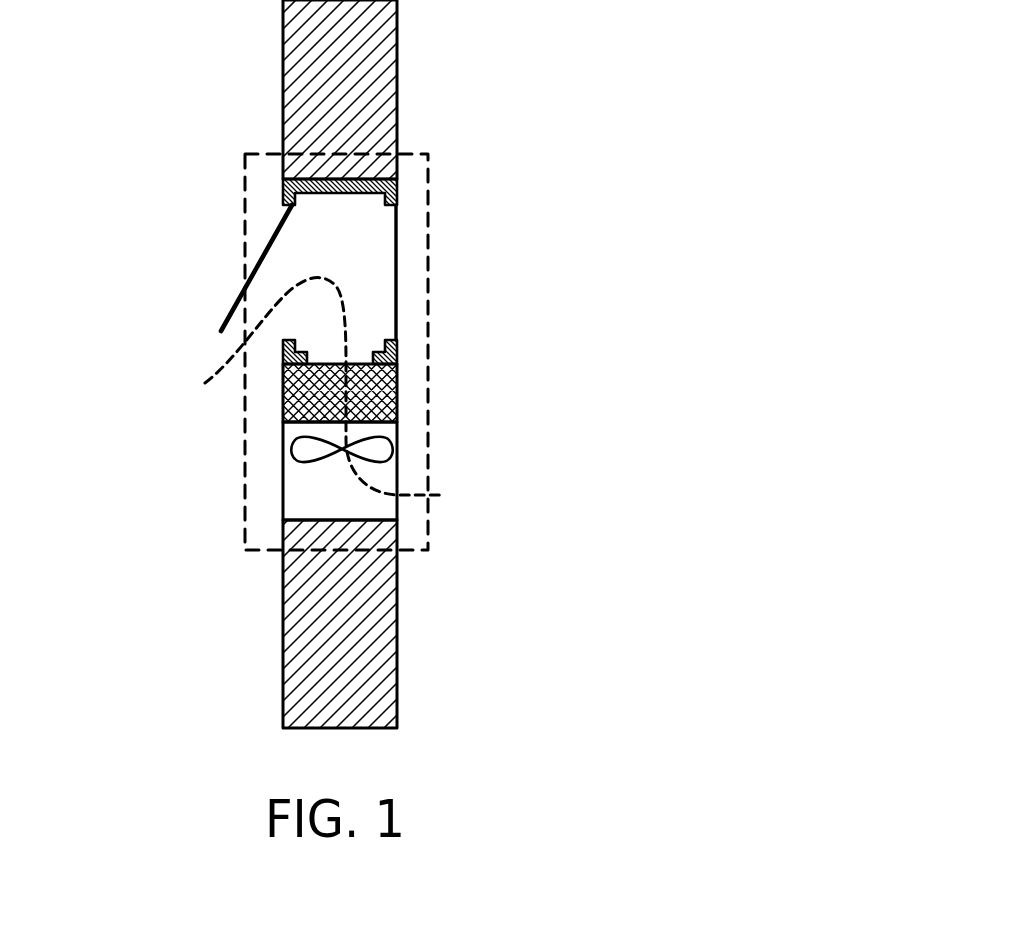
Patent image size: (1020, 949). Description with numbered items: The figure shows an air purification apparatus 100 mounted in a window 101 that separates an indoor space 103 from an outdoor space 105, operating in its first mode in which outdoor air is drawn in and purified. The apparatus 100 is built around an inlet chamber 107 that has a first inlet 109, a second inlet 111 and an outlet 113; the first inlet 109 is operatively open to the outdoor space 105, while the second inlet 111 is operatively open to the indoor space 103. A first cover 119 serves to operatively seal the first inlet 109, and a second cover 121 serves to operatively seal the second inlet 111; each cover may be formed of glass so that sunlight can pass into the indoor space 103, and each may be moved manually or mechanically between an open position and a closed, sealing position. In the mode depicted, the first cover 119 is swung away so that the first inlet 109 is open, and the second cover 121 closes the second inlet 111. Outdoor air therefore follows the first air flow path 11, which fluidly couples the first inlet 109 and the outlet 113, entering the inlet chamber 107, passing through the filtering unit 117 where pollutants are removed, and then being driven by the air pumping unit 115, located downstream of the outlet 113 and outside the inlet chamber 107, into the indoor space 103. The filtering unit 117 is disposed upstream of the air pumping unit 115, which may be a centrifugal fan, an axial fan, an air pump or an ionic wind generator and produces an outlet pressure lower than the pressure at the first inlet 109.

The first air flow path 11 is at (461, 495).
The air purification apparatus 100 is at (243, 543).
The window 101 is at (380, 67).
The indoor space 103 is at (690, 52).
The outdoor space 105 is at (87, 52).
The inlet chamber 107 is at (370, 284).
The first inlet 109 is at (288, 248).
The second inlet 111 is at (397, 228).
The outlet 113 is at (325, 353).
The air pumping unit 115 is at (396, 455).
The filtering unit 117 is at (396, 390).
The first cover 119 is at (248, 257).
The second cover 121 is at (396, 322).